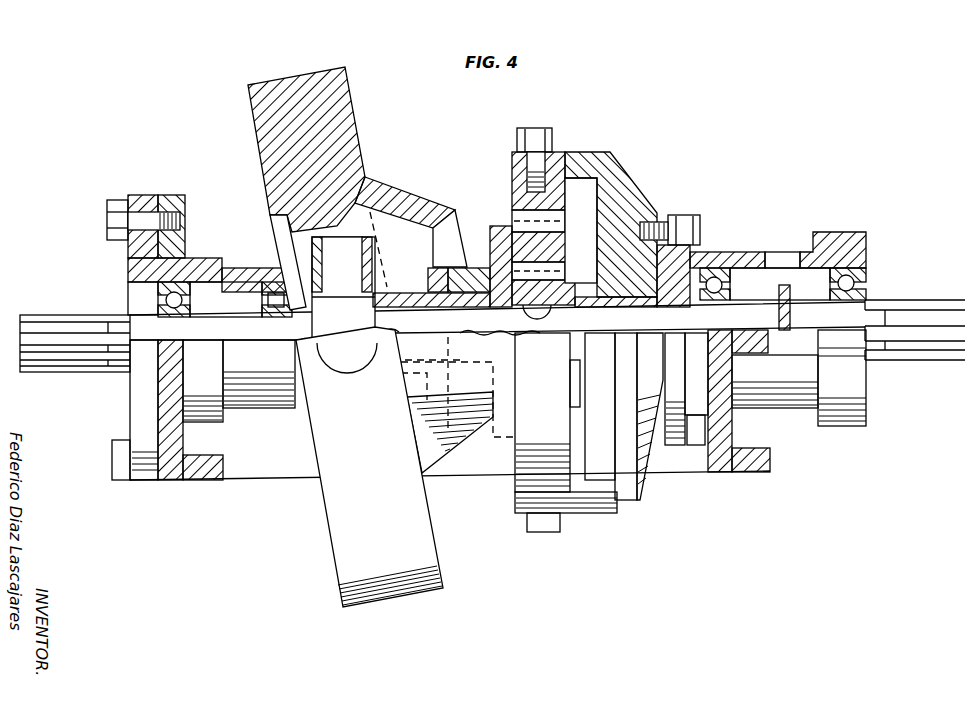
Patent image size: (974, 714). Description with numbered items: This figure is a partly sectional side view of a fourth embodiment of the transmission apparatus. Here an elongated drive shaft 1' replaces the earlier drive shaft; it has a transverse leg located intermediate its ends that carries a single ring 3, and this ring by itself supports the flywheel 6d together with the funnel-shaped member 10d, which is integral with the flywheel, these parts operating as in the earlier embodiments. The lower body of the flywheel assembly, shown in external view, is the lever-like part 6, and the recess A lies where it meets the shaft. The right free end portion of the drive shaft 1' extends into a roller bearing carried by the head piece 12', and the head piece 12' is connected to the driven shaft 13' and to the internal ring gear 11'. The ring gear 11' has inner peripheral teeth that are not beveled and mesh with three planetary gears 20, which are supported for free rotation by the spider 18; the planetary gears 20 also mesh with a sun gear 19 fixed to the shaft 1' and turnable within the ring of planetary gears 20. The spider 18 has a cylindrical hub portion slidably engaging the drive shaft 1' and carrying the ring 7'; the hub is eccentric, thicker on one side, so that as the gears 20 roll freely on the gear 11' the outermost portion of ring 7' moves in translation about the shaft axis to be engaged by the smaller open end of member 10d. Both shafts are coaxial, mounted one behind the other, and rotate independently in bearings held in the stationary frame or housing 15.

The elongated drive shaft 1' is at (492, 309).
The ring 3 is at (312, 252).
The lever 6 is at (413, 588).
The flywheel 6d is at (255, 142).
The ring 7' is at (431, 257).
The funnel-shaped member 10d is at (410, 202).
The internal ring gear 11' is at (553, 324).
The head piece 12' is at (627, 351).
The driven shaft 13' is at (795, 347).
The stationary frame 15 is at (152, 197).
The spider 18 is at (503, 228).
The sun gear 19 is at (547, 323).
The planetary gears 20 is at (614, 315).
The pivot recess A is at (342, 350).